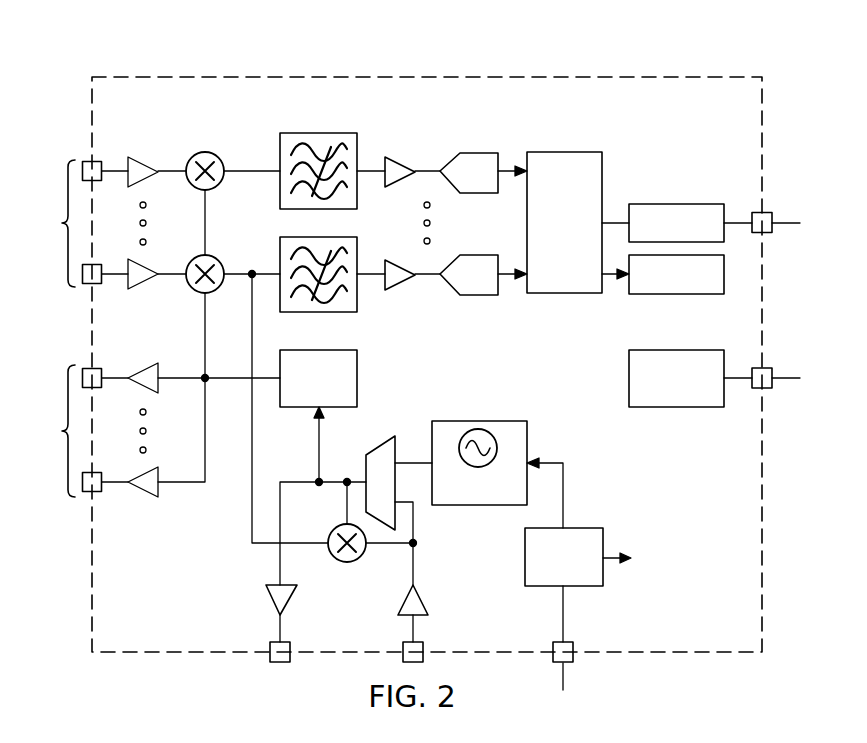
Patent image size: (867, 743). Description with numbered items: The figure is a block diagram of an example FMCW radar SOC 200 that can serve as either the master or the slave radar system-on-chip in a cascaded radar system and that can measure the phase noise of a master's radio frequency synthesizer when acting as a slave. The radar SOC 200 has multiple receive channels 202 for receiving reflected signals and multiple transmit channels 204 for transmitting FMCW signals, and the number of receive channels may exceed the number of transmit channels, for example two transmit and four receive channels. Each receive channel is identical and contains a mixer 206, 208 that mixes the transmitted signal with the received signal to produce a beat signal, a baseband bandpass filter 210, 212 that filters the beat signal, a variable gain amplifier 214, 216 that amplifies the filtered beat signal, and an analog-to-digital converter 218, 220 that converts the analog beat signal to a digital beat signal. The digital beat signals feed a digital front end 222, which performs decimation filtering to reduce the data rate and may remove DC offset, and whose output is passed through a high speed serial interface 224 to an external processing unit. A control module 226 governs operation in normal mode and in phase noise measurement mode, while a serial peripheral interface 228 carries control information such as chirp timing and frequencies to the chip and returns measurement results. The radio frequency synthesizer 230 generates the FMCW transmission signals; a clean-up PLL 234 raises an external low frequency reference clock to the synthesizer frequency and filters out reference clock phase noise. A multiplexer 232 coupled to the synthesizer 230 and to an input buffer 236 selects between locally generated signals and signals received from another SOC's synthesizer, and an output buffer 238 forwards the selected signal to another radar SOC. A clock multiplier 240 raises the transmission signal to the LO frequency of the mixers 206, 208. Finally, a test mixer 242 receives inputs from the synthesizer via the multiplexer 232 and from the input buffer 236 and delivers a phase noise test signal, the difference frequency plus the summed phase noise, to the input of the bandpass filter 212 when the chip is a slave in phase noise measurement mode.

The FMCW radar SOC 200 is at (508, 74).
The receive channels 202 is at (49, 223).
The transmit channels 204 is at (49, 431).
The mixer 206 is at (192, 154).
The mixer 208 is at (192, 257).
The baseband bandpass filter 210 is at (318, 133).
The baseband bandpass filter 212 is at (280, 255).
The variable gain amplifier 214 is at (400, 162).
The variable gain amplifier 216 is at (403, 290).
The analog-to-digital converter 218 is at (478, 153).
The analog-to-digital converter 220 is at (477, 295).
The digital front end 222 is at (564, 222).
The high speed serial interface 224 is at (677, 204).
The control module 226 is at (677, 294).
The serial peripheral interface 228 is at (677, 407).
The radio frequency synthesizer 230 is at (478, 505).
The multiplexer 232 is at (390, 438).
The clean-up PLL 234 is at (580, 586).
The input buffer 236 is at (427, 598).
The output buffer 238 is at (266, 600).
The clock multiplier 240 is at (303, 407).
The test mixer 242 is at (344, 562).